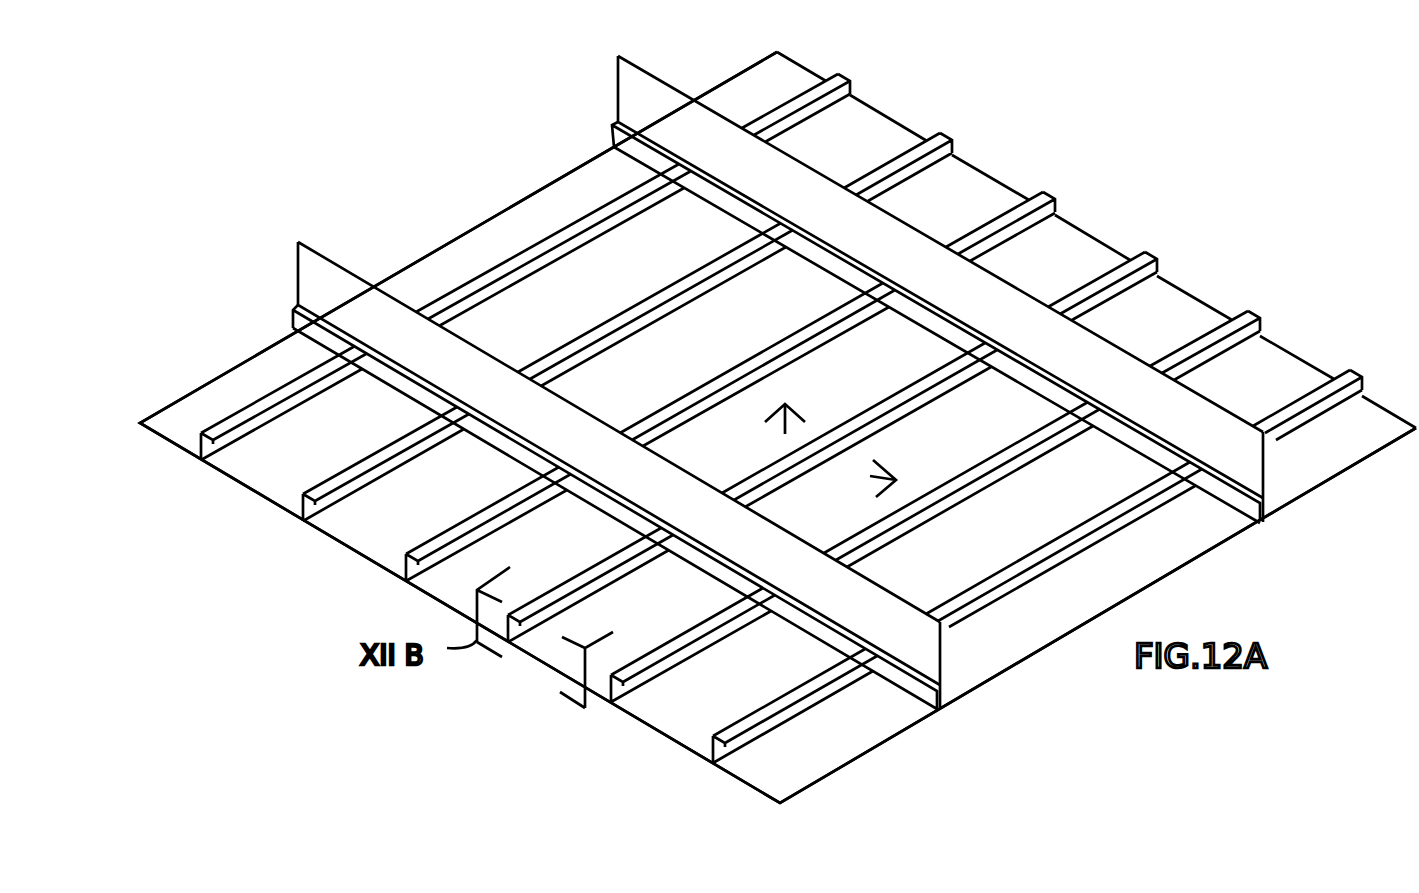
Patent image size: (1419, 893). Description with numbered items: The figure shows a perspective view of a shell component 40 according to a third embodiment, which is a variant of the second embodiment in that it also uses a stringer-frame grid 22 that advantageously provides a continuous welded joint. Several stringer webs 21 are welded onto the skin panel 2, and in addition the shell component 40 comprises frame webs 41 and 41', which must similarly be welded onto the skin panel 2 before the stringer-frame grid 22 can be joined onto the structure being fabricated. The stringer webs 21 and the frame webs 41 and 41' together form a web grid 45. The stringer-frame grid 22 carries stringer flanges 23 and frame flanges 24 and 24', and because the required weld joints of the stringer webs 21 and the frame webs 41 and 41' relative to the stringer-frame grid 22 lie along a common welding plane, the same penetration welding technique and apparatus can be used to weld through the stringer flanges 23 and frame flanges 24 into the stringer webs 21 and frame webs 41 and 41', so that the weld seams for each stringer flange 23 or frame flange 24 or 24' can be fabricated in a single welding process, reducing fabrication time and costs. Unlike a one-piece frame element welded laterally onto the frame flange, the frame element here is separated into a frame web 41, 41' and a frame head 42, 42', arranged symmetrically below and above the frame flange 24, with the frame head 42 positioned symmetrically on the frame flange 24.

The shell component 40 is at (412, 194).
The skin panel 2 is at (548, 203).
The stringer web 21 is at (210, 452).
The stringer-frame grid 22 is at (1040, 190).
The stringer flange 23 is at (823, 78).
The frame flange 24 is at (1292, 497).
The frame flange 24' is at (973, 690).
The frame web 41 is at (937, 361).
The frame web 41' is at (615, 552).
The frame head 42 is at (998, 291).
The frame head 42' is at (681, 478).
The web grid 45 is at (296, 323).